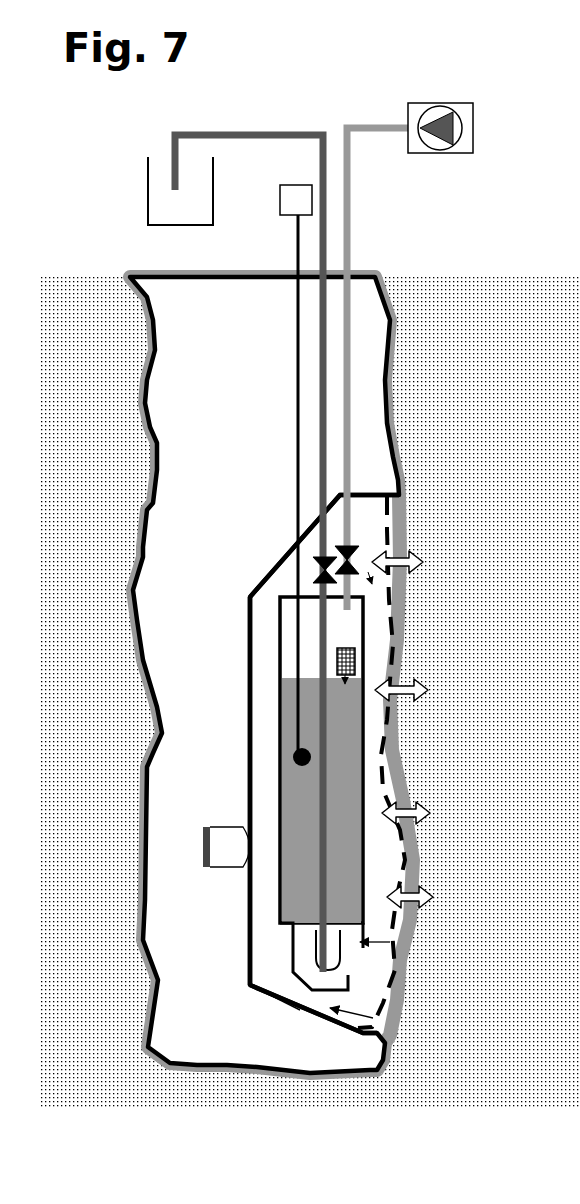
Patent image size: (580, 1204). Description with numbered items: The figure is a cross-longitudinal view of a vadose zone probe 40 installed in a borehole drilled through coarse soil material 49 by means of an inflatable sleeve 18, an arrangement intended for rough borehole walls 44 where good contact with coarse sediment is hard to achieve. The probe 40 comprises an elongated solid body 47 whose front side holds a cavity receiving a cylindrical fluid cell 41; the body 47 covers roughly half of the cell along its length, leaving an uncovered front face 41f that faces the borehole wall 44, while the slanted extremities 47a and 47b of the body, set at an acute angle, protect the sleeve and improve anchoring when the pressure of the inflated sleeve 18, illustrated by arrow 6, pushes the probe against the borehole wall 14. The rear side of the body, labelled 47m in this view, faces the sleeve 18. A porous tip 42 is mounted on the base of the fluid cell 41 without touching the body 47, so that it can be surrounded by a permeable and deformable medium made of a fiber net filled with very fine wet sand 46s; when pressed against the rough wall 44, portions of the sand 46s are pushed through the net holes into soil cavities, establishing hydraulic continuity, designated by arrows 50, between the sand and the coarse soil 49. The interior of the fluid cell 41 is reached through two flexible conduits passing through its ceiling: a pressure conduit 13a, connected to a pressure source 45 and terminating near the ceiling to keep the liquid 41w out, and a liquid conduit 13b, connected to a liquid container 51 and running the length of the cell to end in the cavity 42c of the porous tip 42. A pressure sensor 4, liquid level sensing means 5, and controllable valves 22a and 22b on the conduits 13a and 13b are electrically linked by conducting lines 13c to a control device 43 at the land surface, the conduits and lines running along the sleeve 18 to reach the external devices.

The pressure sensor 4 is at (337, 663).
The liquid level sensing means 5 is at (296, 757).
The arrow indicating pressure 6 is at (220, 847).
The pressure conduit 13a is at (345, 180).
The liquid conduit 13b is at (310, 135).
The conducting lines 13c is at (297, 228).
The borehole wall 14 is at (407, 458).
The inflatable sleeve 18 is at (153, 413).
The controllable valve 22a is at (358, 550).
The controllable valve 22b is at (318, 582).
The vadose zone probe 40 is at (277, 988).
The fluid cell 41 is at (272, 748).
The front face 41f is at (364, 893).
The liquid 41w is at (307, 788).
The porous tip 42 is at (347, 963).
The cavity of porous tip 42c is at (337, 950).
The control device 43 is at (280, 188).
The rough borehole walls 44 is at (127, 583).
The pressure source 45 is at (425, 103).
The fine wet sand 46s is at (360, 652).
The elongated solid body 47 is at (262, 723).
The slanted extremity 47a is at (293, 557).
The slanted extremity 47b is at (287, 1018).
The casing wall 47m is at (579, 100).
The coarse soil material 49 is at (457, 290).
The arrows indicating hydraulic continuity 50 is at (424, 562).
The liquid container 51 is at (147, 167).